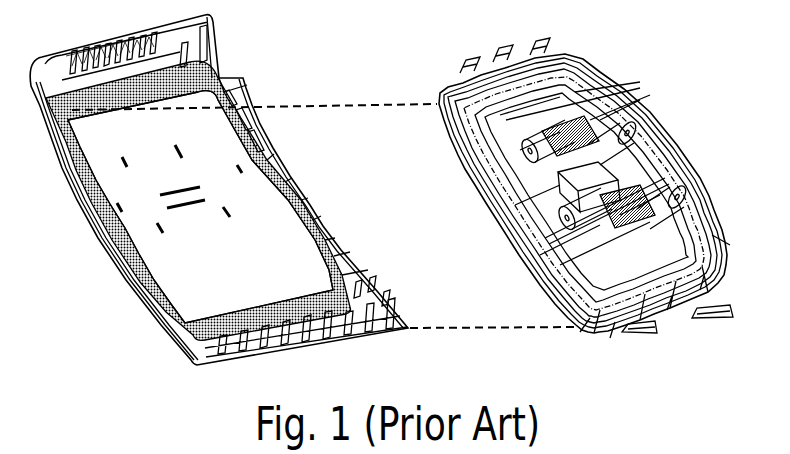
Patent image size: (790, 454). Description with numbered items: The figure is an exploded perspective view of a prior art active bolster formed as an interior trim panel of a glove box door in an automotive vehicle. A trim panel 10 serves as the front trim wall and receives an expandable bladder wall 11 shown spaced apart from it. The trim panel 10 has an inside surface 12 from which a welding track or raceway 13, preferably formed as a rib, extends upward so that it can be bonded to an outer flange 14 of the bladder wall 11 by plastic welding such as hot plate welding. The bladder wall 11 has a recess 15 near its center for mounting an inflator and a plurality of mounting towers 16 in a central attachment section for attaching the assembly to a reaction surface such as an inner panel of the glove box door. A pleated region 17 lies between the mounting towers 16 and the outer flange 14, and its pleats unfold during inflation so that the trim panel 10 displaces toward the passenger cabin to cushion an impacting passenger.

The trim panel 10 is at (150, 312).
The bladder wall 11 is at (651, 111).
The inside surface 12 is at (107, 178).
The welding track or raceway 13 is at (332, 248).
The outer flange 14 is at (723, 290).
The recess 15 is at (597, 177).
The mounting towers 16 is at (673, 186).
The pleated region 17 is at (468, 102).